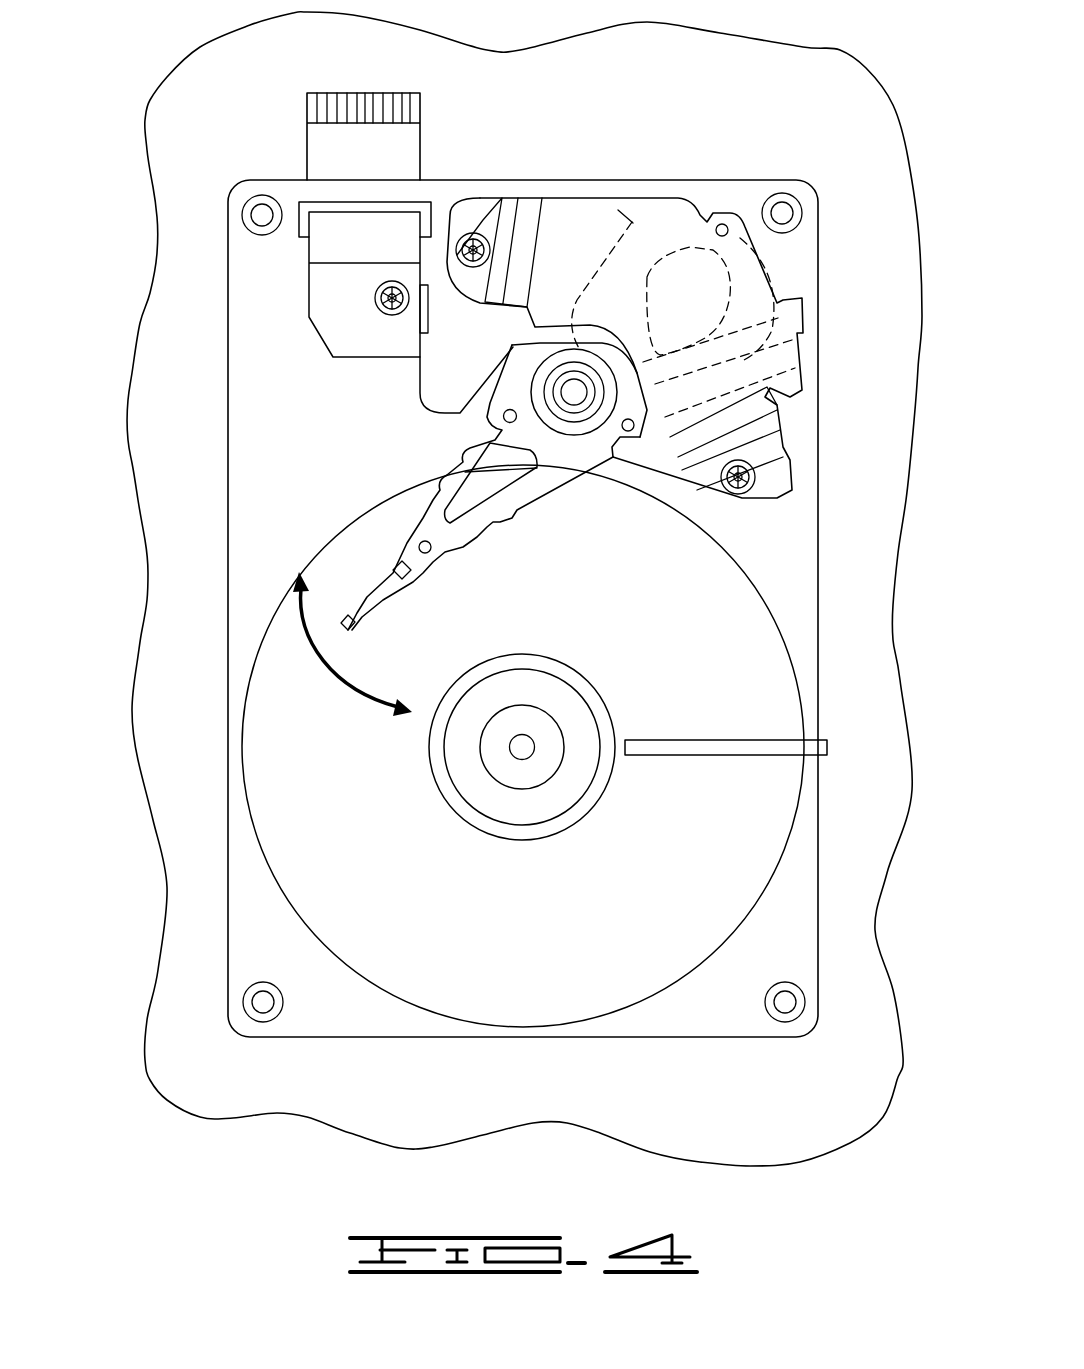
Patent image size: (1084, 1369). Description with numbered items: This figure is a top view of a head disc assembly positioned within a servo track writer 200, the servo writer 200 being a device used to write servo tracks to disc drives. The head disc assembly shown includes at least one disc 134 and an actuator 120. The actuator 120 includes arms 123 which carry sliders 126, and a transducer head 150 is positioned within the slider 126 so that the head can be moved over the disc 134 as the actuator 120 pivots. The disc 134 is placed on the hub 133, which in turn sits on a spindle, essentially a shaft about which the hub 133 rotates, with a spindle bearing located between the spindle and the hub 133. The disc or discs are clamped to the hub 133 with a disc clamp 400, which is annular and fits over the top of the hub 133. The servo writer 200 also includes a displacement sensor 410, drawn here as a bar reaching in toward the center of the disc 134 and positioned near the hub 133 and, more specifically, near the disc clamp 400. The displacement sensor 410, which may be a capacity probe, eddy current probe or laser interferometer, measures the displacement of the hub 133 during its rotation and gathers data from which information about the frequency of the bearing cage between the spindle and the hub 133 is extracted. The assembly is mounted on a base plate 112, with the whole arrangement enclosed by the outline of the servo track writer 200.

The base plate 112 is at (803, 955).
The actuator 120 is at (618, 465).
The arms 123 is at (437, 533).
The slider 126 is at (350, 615).
The hub 133 is at (452, 798).
The disc 134 is at (490, 990).
The transducer head 150 is at (345, 627).
The servo track writer 200 is at (187, 887).
The disc clamp 400 is at (560, 827).
The displacement sensor 410 is at (838, 738).